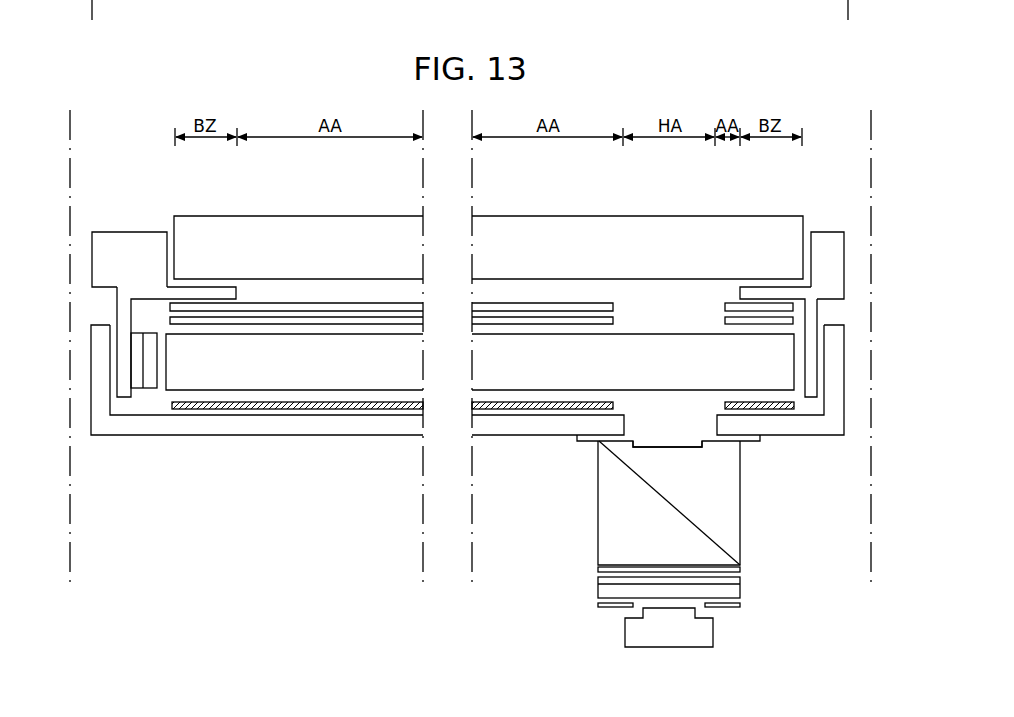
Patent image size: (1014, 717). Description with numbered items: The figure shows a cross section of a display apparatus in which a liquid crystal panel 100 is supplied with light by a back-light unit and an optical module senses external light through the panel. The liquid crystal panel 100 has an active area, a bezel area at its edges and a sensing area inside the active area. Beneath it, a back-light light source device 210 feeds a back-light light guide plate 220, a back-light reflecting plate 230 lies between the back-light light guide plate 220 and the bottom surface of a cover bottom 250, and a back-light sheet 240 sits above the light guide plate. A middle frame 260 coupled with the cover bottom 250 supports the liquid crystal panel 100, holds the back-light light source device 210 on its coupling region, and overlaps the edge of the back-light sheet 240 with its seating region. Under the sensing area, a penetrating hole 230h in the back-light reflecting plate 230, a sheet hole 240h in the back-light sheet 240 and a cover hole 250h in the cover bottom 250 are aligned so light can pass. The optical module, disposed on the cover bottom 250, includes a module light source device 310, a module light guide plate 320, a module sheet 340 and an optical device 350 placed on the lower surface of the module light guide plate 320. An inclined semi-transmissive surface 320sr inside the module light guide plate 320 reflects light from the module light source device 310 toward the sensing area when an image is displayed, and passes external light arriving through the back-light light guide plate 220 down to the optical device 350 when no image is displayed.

The liquid crystal panel 100 is at (793, 224).
The back-light light source device 210 is at (144, 393).
The back-light light guide plate 220 is at (257, 377).
The back-light reflecting plate 230 is at (217, 407).
The penetrating hole 230h is at (693, 400).
The back-light sheet 240 is at (152, 315).
The sheet hole 240h is at (693, 308).
The cover bottom 250 is at (99, 398).
The cover hole 250h is at (701, 427).
The middle frame 260 is at (99, 250).
The module light source device 310 is at (653, 448).
The module light guide plate 320 is at (727, 485).
The semi-transmissive surface 320sr is at (718, 548).
The module sheet 340 is at (745, 586).
The optical device 350 is at (663, 633).